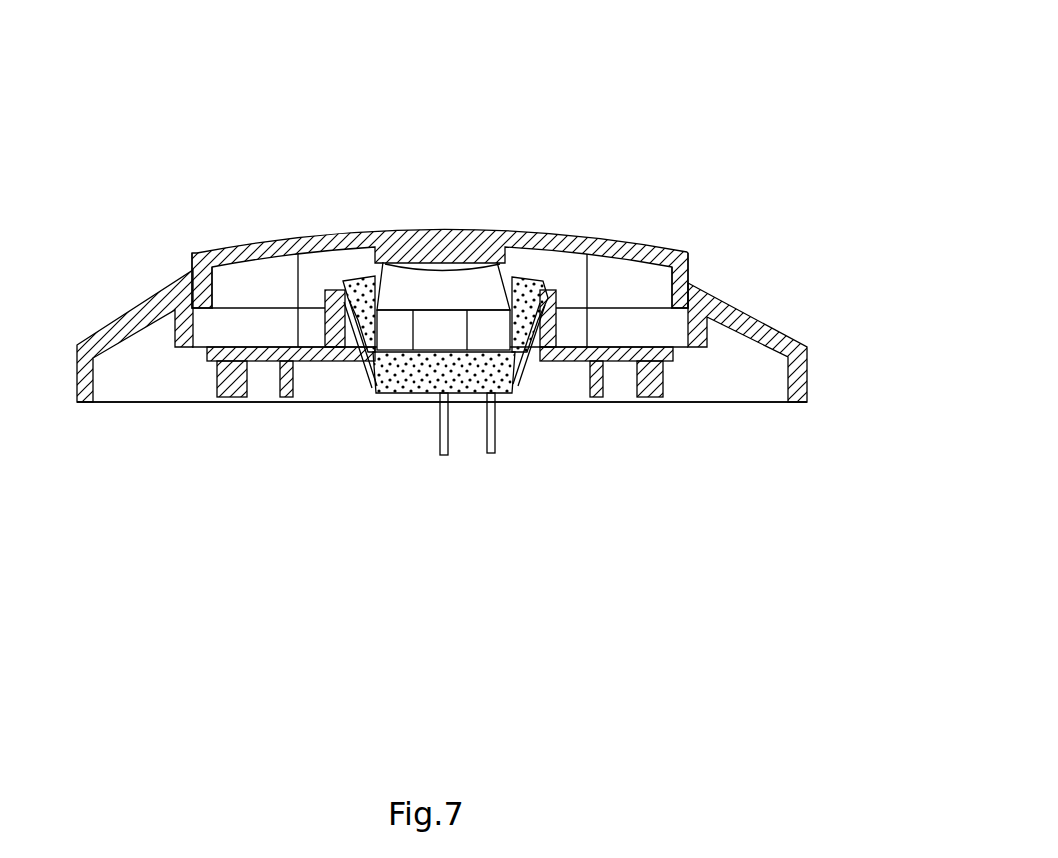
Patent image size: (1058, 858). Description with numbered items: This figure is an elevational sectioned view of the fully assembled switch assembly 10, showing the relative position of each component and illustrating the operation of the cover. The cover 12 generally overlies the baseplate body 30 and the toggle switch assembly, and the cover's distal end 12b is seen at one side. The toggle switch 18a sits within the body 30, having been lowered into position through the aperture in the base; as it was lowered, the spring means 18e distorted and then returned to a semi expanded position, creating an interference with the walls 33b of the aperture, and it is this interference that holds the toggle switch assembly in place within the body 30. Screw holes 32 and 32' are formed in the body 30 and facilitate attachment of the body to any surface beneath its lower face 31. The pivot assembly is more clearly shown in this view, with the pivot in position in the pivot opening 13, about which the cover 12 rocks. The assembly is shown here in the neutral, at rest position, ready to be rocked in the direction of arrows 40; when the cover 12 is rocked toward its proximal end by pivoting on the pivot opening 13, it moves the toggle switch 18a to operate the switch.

The switch assembly 10 is at (630, 123).
The cover 12 is at (322, 230).
The distal end 12b is at (190, 277).
The pivot opening 13 is at (653, 240).
The toggle switch 18a is at (428, 270).
The spring means 18e is at (540, 320).
The baseplate body 30 is at (723, 312).
The lower face 31 is at (745, 403).
The screw hole 32 is at (588, 418).
The screw hole 32' is at (264, 404).
The walls of aperture 33b is at (350, 365).
The arrows 40 is at (310, 180).